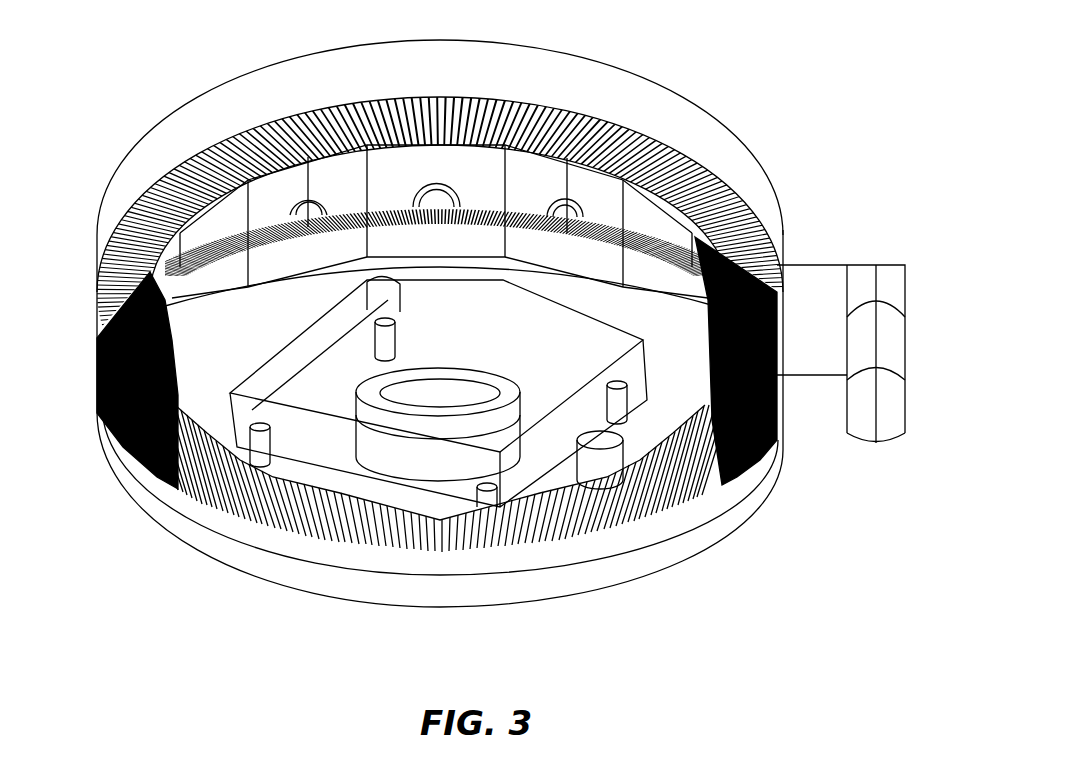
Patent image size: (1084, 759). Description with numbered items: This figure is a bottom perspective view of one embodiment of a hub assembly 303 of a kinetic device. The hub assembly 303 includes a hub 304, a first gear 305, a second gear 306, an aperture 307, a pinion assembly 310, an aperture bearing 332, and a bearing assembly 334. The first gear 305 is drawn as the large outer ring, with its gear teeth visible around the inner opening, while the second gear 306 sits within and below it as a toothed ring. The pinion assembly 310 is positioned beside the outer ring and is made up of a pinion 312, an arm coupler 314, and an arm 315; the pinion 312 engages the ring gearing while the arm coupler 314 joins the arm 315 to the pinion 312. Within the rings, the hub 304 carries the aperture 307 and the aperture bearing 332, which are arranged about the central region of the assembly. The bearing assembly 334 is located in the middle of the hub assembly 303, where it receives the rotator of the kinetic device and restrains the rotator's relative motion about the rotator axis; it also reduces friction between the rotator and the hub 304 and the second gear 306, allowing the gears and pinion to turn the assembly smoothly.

The hub assembly 303 is at (92, 92).
The hub 304 is at (270, 185).
The first gear 305 is at (712, 125).
The second gear 306 is at (130, 487).
The aperture 307 is at (312, 190).
The pinion assembly 310 is at (889, 238).
The pinion 312 is at (777, 287).
The arm coupler 314 is at (893, 344).
The arm 315 is at (890, 405).
The aperture bearing 332 is at (563, 200).
The bearing assembly 334 is at (545, 455).